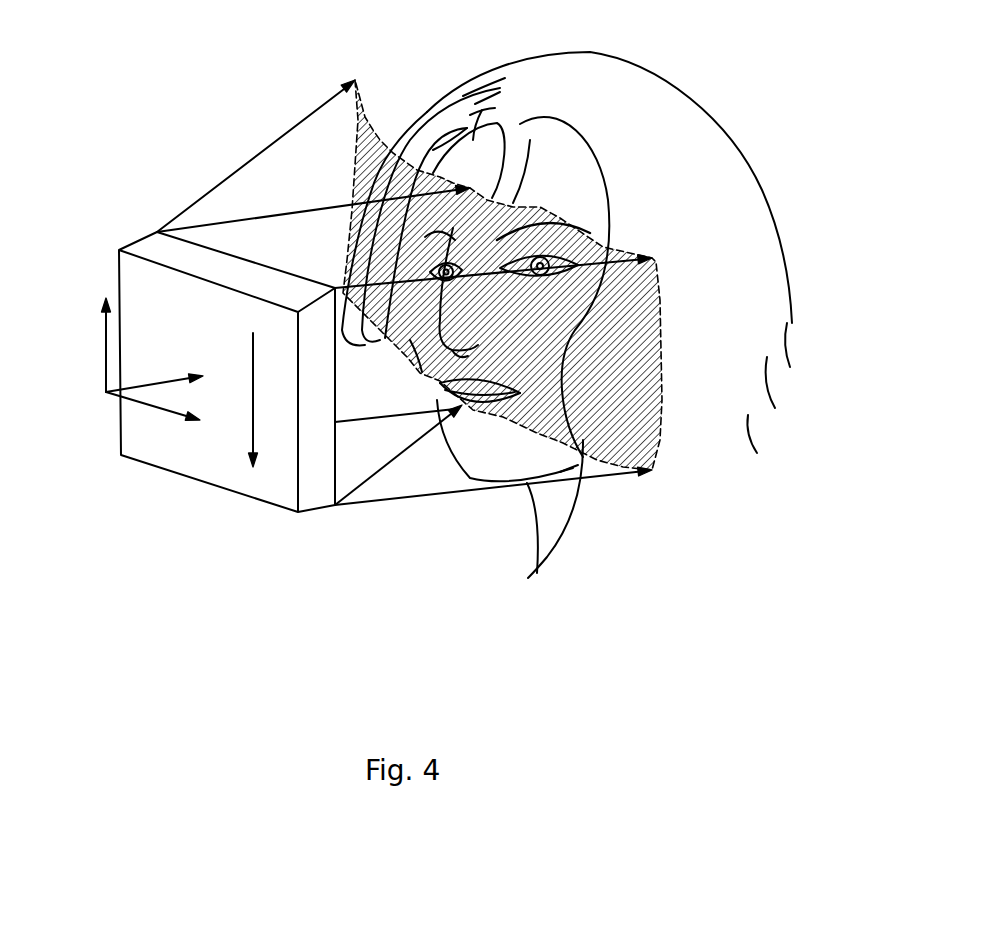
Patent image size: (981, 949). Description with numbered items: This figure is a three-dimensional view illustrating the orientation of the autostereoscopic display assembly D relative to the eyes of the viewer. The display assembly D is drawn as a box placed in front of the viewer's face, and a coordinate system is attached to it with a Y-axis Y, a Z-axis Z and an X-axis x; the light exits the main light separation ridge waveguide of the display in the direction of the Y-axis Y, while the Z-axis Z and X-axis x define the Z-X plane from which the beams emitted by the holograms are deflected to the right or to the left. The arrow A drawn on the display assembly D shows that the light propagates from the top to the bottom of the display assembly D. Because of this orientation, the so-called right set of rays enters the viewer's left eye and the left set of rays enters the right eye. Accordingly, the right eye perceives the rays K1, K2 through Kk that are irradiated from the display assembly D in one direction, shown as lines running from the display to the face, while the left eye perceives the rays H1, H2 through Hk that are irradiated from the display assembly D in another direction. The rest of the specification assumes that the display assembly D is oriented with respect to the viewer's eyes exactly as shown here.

The autostereoscopic display assembly D is at (148, 290).
The arrow A is at (253, 408).
The Y-axis Y is at (94, 345).
The Z-axis Z is at (154, 370).
The X-axis x is at (154, 425).
The ray K1 is at (237, 170).
The ray H1 is at (310, 212).
The ray K2 is at (393, 152).
The ray H2 is at (612, 278).
The ray Hk is at (588, 463).
The ray Kk is at (445, 418).